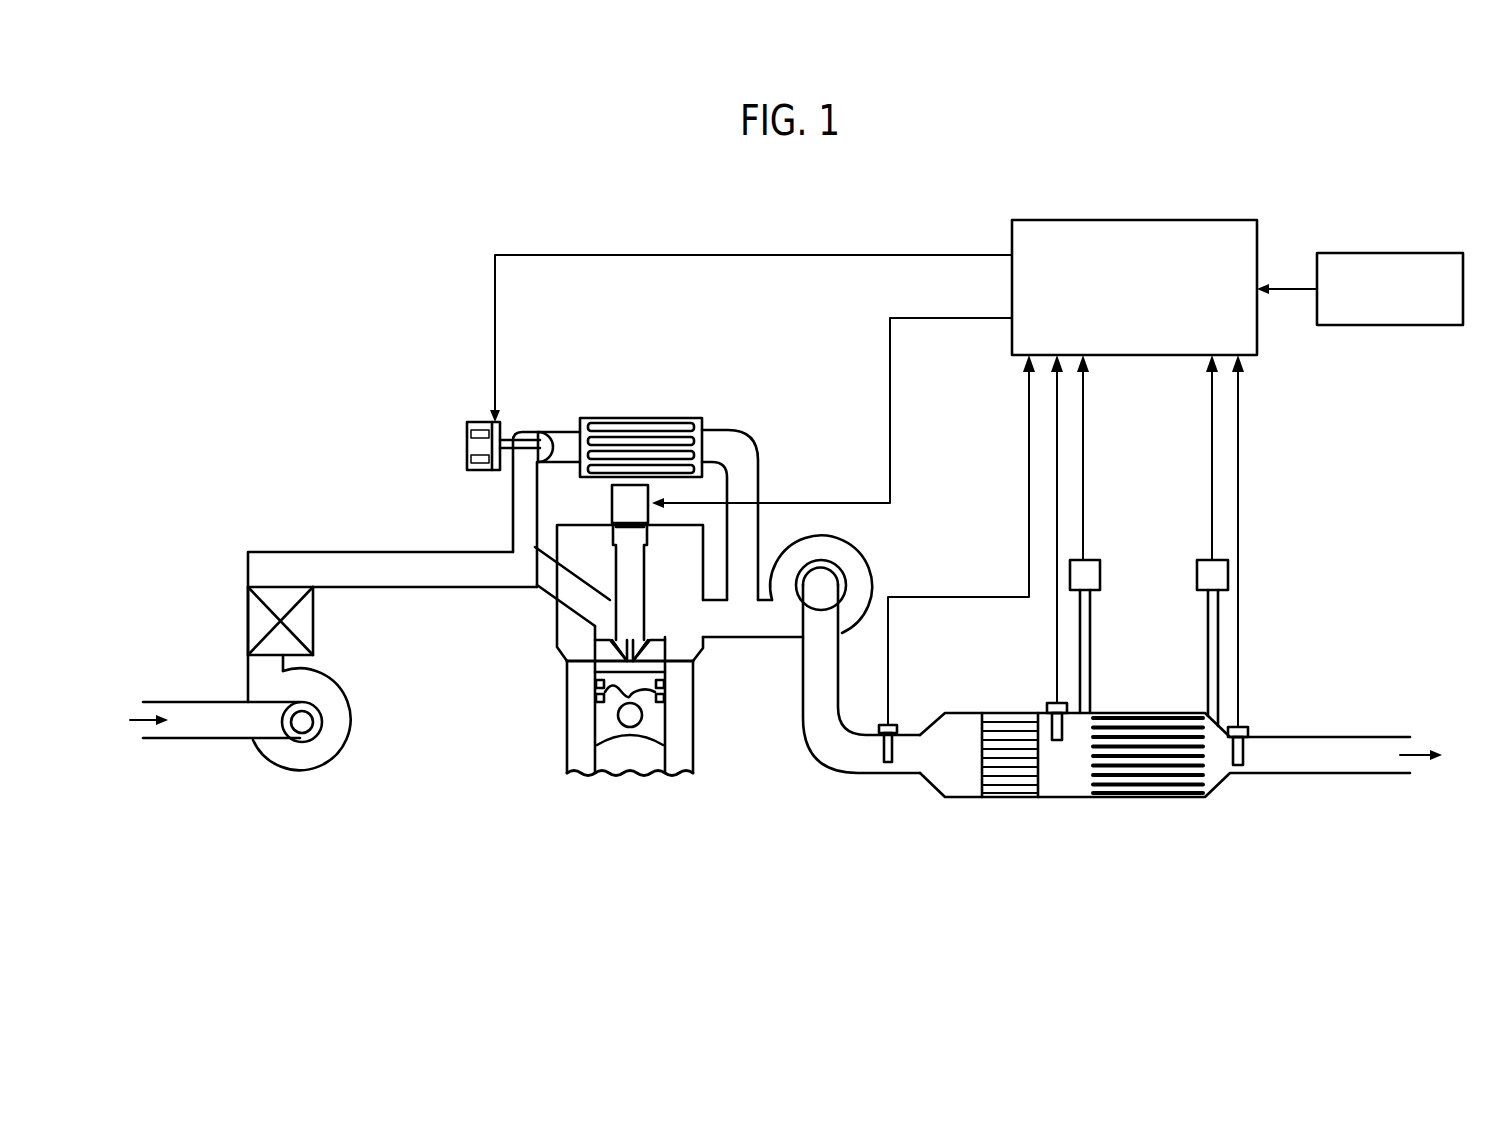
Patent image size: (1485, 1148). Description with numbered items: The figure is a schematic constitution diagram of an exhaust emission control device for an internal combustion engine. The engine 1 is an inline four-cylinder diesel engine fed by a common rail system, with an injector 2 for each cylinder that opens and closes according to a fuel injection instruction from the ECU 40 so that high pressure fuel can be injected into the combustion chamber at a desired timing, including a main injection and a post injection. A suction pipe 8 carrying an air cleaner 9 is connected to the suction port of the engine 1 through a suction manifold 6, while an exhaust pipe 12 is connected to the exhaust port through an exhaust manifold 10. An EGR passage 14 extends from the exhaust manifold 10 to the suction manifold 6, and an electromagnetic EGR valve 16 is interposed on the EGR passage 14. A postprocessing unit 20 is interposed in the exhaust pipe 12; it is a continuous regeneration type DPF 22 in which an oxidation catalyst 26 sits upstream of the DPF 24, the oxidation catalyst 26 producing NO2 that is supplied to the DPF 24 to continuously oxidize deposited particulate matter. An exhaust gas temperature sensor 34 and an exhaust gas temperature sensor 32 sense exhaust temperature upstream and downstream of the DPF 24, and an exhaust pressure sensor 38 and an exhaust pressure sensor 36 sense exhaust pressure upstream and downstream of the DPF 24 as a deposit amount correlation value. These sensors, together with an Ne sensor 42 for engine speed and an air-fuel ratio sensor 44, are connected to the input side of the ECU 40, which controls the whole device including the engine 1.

The engine 1 is at (500, 716).
The injector 2 is at (630, 587).
The suction manifold 6 is at (553, 585).
The suction pipe 8 is at (346, 556).
The air cleaner 9 is at (248, 620).
The exhaust manifold 10 is at (738, 625).
The exhaust pipe 12 is at (822, 740).
The EGR passage 14 is at (742, 450).
The electromagnetic EGR valve 16 is at (467, 447).
The postprocessing unit 20 is at (988, 853).
The continuous regeneration type DPF 22 is at (945, 813).
The DPF 24 is at (1142, 735).
The oxidation catalyst 26 is at (1000, 730).
The exhaust gas temperature sensor 32 is at (1243, 727).
The exhaust gas temperature sensor 34 is at (1050, 703).
The exhaust pressure sensor 36 is at (1205, 565).
The exhaust pressure sensor 38 is at (1088, 565).
The ECU 40 is at (1061, 219).
The Ne sensor 42 is at (1353, 252).
The air-fuel ratio sensor 44 is at (893, 722).